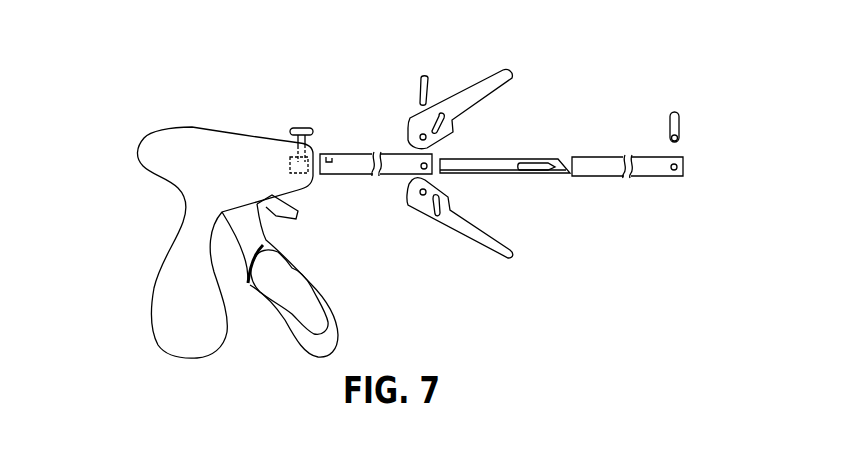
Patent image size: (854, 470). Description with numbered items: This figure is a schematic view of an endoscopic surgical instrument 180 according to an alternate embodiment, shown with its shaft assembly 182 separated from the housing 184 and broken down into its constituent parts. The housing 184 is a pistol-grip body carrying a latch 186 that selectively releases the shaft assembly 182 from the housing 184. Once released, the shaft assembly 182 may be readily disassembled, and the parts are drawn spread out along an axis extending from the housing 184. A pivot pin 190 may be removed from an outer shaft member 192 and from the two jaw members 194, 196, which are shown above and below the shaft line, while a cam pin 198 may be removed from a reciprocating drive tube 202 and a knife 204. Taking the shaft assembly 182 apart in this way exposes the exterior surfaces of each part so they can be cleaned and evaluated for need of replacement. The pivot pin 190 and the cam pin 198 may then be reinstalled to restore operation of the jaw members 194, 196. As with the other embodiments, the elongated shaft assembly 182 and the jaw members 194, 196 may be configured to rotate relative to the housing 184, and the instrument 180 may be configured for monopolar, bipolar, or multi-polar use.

The instrument 180 is at (121, 94).
The shaft assembly 182 is at (362, 60).
The housing 184 is at (213, 140).
The latch 186 is at (298, 127).
The pivot pin 190 is at (422, 77).
The outer shaft member 192 is at (358, 153).
The jaw member 194 is at (497, 75).
The jaw member 196 is at (463, 230).
The cam pin 198 is at (673, 112).
The reciprocating drive tube 202 is at (587, 162).
The knife 204 is at (500, 167).